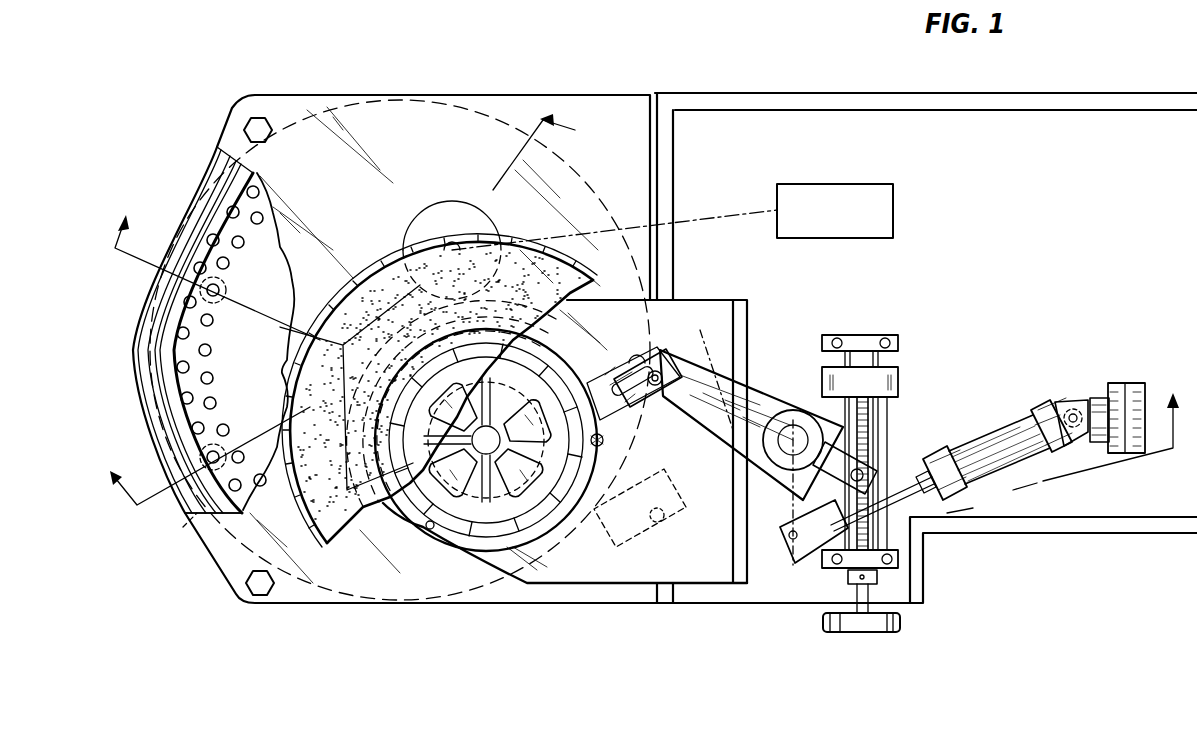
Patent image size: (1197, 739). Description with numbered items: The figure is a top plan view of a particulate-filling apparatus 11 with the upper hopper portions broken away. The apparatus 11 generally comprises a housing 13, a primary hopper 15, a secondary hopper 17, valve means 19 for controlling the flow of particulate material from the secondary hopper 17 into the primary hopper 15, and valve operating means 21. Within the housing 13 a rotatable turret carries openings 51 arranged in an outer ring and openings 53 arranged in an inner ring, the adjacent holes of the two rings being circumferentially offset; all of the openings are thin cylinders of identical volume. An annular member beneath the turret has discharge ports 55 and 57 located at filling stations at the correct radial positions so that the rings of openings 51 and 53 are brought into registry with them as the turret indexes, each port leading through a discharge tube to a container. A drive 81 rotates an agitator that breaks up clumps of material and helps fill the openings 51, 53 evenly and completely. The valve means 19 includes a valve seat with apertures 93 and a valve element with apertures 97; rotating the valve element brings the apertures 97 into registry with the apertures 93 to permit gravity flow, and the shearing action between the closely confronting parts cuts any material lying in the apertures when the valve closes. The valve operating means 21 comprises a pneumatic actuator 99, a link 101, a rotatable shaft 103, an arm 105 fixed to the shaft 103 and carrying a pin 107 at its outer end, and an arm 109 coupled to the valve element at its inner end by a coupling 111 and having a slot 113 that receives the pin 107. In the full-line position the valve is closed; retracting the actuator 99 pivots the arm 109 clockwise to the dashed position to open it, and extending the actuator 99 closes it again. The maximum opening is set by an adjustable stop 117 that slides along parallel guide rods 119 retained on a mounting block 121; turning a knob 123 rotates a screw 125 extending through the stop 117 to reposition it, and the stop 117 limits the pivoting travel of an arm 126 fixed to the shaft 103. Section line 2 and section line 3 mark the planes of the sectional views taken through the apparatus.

The apparatus 11 is at (762, 88).
The housing 13 is at (200, 196).
The primary hopper 15 is at (180, 280).
The secondary hopper 17 is at (372, 282).
The valve means 19 is at (503, 405).
The valve operating means 21 is at (762, 376).
The openings 51 is at (196, 430).
The openings 53 is at (224, 428).
The discharge port 55 is at (198, 528).
The discharge port 57 is at (228, 290).
The drive 81 is at (872, 195).
The apertures 93 is at (538, 362).
The apertures 97 is at (507, 483).
The pneumatic actuator 99 is at (1032, 391).
The link 101 is at (780, 522).
The rotatable shaft 103 is at (737, 467).
The arm 105 is at (733, 444).
The pin 107 is at (678, 366).
The arm 109 is at (615, 368).
The coupling 111 is at (614, 278).
The slot 113 is at (645, 354).
The adjustable stop 117 is at (900, 382).
The guide rods 119 is at (876, 342).
The mounting block 121 is at (923, 569).
The knob 123 is at (883, 632).
The screw 125 is at (900, 410).
The arm 126 is at (822, 410).
The section line 2- 2 is at (647, 349).
The section line 3- 3 is at (351, 324).